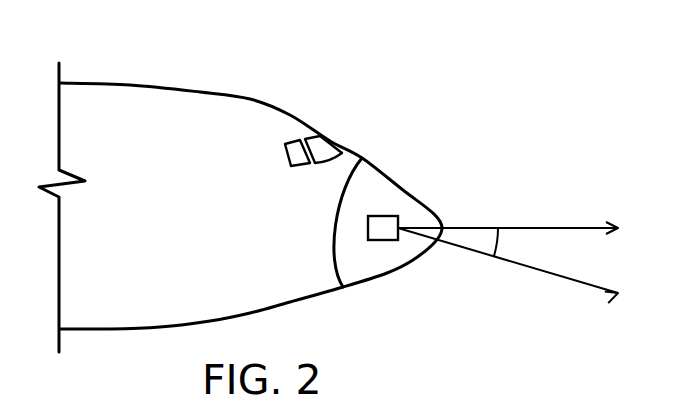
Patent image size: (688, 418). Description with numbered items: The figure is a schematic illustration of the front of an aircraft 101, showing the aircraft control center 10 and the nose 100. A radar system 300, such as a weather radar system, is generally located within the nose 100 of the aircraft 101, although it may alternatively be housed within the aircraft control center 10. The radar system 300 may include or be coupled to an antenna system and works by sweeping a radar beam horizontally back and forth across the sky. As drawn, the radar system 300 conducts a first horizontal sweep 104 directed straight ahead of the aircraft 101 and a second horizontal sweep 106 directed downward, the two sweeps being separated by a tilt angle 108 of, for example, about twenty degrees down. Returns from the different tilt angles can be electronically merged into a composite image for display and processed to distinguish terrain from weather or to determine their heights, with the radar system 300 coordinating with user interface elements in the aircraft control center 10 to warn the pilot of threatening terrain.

The aircraft control center 10 is at (288, 130).
The nose 100 is at (360, 178).
The aircraft 101 is at (426, 67).
The first horizontal sweep 104 is at (588, 225).
The second horizontal sweep 106 is at (552, 275).
The tilt angle 108 is at (500, 230).
The radar system 300 is at (382, 228).